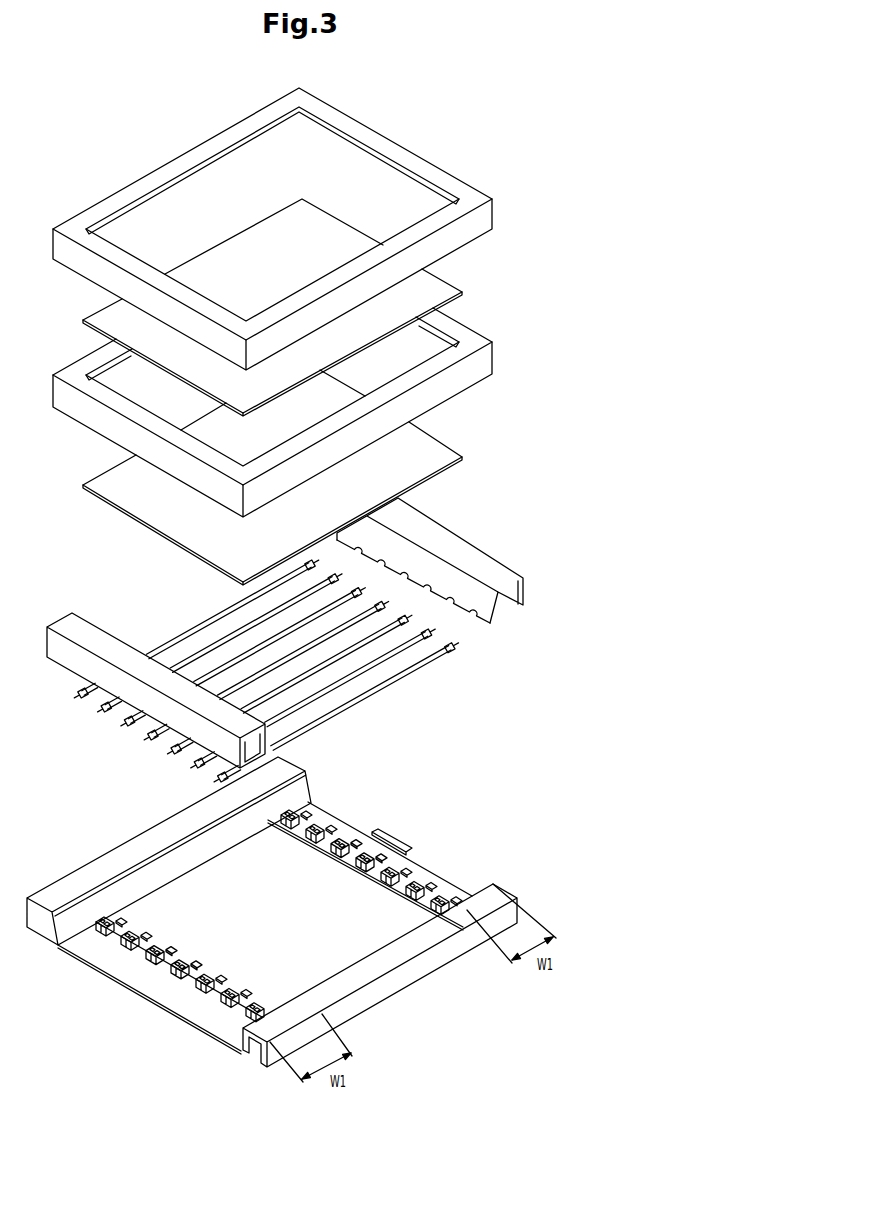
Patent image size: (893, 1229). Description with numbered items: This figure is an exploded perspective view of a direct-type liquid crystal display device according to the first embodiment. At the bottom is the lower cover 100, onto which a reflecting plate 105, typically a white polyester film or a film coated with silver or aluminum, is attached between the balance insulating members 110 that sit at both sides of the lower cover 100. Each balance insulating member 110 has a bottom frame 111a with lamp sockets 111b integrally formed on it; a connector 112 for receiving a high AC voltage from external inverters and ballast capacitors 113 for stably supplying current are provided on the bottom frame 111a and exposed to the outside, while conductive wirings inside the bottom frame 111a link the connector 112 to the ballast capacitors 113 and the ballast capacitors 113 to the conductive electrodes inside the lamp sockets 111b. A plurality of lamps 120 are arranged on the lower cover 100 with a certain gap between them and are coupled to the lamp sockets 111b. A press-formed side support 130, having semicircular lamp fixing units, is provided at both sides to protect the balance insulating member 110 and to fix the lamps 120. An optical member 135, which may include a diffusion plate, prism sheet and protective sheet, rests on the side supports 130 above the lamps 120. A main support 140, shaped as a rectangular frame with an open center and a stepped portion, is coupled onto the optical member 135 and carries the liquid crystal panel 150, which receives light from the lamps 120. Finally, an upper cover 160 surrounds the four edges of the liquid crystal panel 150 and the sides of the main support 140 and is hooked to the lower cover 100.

The upper cover 160 is at (397, 149).
The liquid crystal panel 150 is at (448, 289).
The main support 140 is at (488, 366).
The optical member 135 is at (437, 453).
The side support 130 is at (457, 549).
The lamps 120 is at (452, 647).
The balance insulating member 110 is at (313, 887).
The bottom frame 111a is at (455, 886).
The lamp sockets 111b is at (318, 822).
The connector 112 is at (405, 848).
The ballast capacitors 113 is at (397, 821).
The reflecting plate 105 is at (168, 892).
The lower cover 100 is at (396, 986).